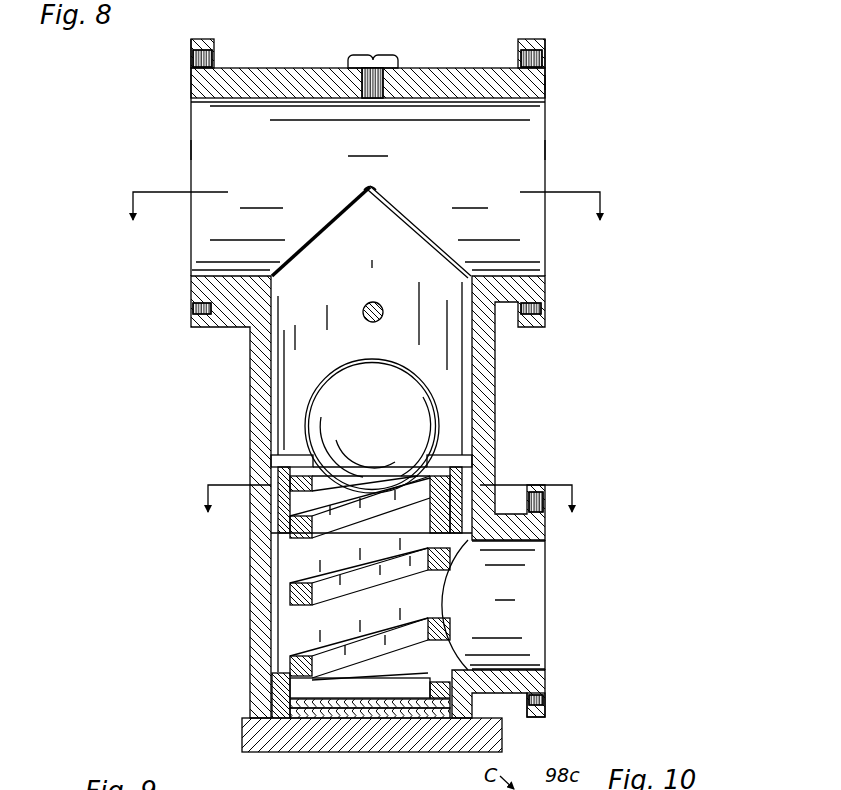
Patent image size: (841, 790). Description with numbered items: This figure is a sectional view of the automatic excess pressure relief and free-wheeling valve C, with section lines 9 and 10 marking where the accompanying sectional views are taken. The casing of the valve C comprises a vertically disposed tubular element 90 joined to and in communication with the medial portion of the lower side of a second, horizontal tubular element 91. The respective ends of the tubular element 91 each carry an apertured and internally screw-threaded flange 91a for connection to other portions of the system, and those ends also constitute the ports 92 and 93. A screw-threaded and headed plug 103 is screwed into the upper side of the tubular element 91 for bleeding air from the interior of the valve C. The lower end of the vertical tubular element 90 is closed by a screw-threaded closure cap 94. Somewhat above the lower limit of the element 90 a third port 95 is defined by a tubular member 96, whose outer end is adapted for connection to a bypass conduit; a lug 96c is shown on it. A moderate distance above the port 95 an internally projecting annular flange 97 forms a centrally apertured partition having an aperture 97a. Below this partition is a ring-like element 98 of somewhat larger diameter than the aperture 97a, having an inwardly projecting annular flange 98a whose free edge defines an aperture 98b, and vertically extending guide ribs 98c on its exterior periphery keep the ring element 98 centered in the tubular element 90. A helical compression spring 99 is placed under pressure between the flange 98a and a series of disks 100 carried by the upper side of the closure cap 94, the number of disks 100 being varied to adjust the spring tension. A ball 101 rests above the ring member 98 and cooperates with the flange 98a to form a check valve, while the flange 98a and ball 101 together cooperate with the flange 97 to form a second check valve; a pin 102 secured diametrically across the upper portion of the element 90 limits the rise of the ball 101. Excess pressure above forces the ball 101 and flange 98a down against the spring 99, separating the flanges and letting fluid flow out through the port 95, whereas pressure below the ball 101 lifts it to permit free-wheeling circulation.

The vertically disposed tubular element 90 is at (250, 368).
The second tubular element 91 is at (255, 75).
The apertured and internally screw-threaded flange 91a is at (200, 46).
The port 92 is at (518, 150).
The port 93 is at (205, 150).
The closure cap 94 is at (262, 733).
The third port 95 is at (535, 610).
The tubular member 96 is at (512, 522).
The lower housing lug 96c is at (548, 708).
The internally projecting annular flange 97 is at (284, 456).
The aperture 97a is at (447, 458).
The ring-like element 98 is at (275, 470).
The inwardly projecting annular flange 98a is at (432, 475).
The aperture 98b is at (416, 518).
The guide ribs 98c is at (277, 510).
The helical compression spring 99 is at (392, 638).
The disks 100 is at (360, 712).
The ball 101 is at (388, 368).
The pin 102 is at (374, 302).
The screw-threaded and headed plug 103 is at (364, 58).
The automatic excess pressure relief and free-wheeling valve C is at (554, 82).
The section line 9- 9 is at (361, 208).
The section line 10- 10 is at (390, 501).